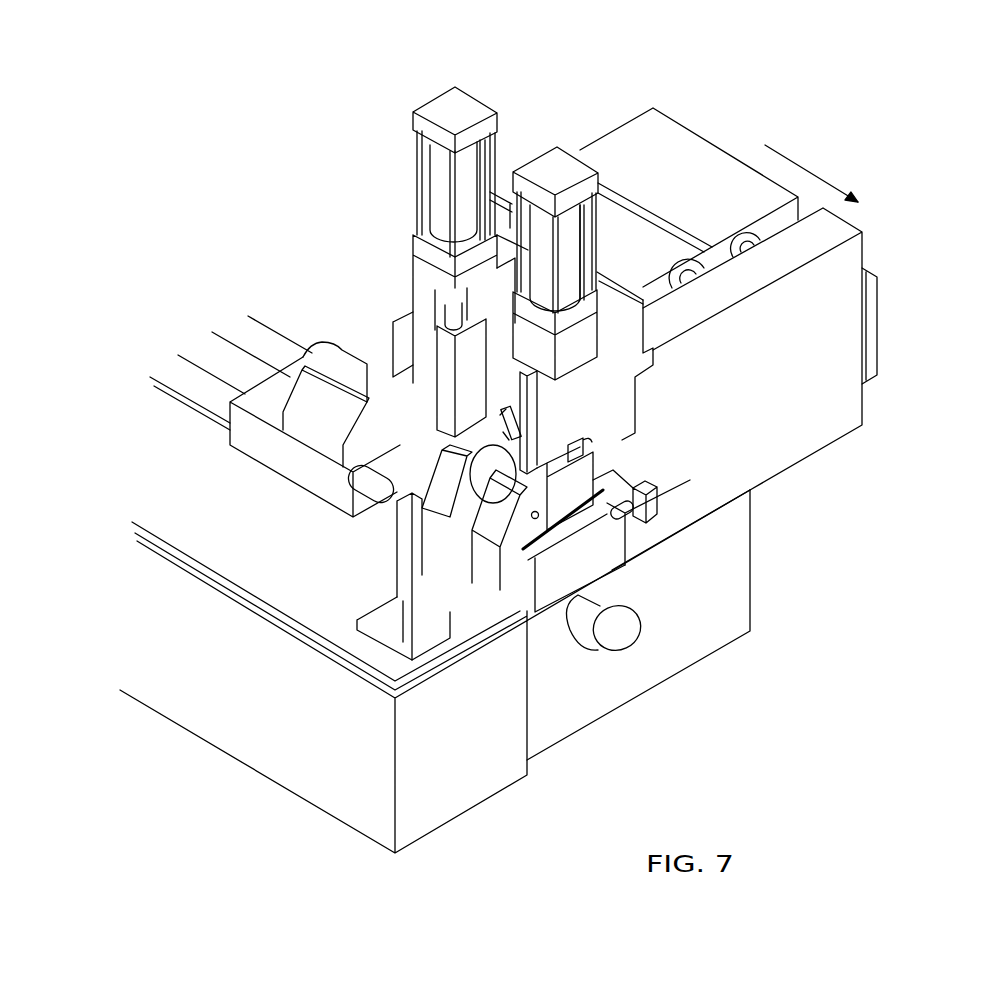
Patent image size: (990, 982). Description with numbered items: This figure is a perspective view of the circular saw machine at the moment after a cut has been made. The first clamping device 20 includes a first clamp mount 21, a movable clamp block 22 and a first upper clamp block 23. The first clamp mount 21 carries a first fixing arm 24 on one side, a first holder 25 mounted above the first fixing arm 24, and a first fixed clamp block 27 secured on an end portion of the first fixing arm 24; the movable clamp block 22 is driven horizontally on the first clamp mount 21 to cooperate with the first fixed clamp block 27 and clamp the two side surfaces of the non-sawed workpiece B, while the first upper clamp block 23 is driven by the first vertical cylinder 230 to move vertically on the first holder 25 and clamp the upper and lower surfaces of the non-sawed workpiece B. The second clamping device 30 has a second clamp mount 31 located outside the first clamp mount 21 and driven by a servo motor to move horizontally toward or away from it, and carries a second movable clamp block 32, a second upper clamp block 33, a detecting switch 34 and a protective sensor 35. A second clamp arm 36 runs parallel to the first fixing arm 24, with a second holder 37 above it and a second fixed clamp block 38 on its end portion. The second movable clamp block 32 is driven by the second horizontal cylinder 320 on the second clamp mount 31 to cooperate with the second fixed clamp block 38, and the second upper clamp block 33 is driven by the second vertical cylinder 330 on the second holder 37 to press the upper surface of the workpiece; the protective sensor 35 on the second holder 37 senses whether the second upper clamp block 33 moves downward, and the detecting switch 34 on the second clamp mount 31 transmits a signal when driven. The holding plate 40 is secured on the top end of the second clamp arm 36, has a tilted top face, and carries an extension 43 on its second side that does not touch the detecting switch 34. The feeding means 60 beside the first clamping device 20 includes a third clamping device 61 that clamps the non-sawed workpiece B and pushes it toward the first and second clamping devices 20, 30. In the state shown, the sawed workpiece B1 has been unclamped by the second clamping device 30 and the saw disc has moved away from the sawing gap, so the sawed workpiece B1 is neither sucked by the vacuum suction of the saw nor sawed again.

The first clamping device 20 is at (345, 104).
The first clamp mount 21 is at (697, 143).
The movable clamp block 22 is at (517, 408).
The first upper clamp block 23 is at (445, 378).
The first fixing arm 24 is at (415, 553).
The first holder 25 is at (415, 283).
The first fixed clamp block 27 is at (418, 490).
The second clamping device 30 is at (843, 467).
The second clamp mount 31 is at (835, 410).
The second movable clamp block 32 is at (557, 487).
The second upper clamp block 33 is at (523, 437).
The detecting switch 34 is at (650, 497).
The protective sensor 35 is at (582, 447).
The second clamp arm 36 is at (528, 637).
The second holder 37 is at (637, 330).
The second fixed clamp block 38 is at (493, 527).
The holding plate 40 is at (552, 560).
The extension 43 is at (606, 545).
The feeding means 60 is at (182, 298).
The third clamping device 61 is at (317, 418).
The first vertical cylinder 230 is at (438, 181).
The second horizontal cylinder 320 is at (870, 323).
The second vertical cylinder 330 is at (546, 162).
The non-sawed workpiece B is at (333, 358).
The sawed workpiece B1 is at (617, 637).